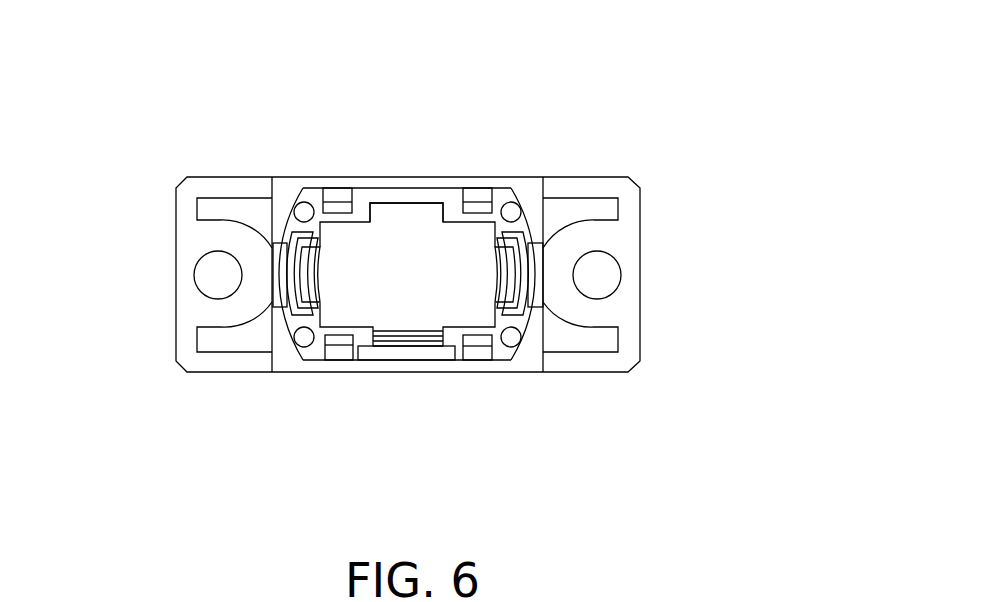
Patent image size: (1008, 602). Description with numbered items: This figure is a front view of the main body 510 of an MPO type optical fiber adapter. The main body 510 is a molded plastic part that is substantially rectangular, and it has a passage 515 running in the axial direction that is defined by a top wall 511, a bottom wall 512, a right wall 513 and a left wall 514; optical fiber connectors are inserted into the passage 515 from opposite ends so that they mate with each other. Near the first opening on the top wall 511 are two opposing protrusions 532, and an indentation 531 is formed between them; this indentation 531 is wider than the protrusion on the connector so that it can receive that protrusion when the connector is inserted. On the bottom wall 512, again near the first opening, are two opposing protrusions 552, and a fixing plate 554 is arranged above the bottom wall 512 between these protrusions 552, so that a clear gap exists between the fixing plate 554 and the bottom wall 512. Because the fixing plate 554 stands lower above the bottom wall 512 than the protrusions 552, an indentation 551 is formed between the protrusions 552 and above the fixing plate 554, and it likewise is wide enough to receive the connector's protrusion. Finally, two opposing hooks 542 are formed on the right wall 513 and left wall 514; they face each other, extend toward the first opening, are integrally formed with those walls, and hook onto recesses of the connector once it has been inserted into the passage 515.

The main body 510 is at (680, 107).
The top wall 511 is at (368, 186).
The bottom wall 512 is at (355, 366).
The right wall 513 is at (537, 210).
The left wall 514 is at (280, 352).
The passage 515 is at (410, 267).
The indentation 531 is at (408, 210).
The protrusions 532 is at (340, 222).
The hooks 542 is at (302, 272).
The indentation 551 is at (392, 325).
The protrusions 552 is at (331, 325).
The fixing plate 554 is at (422, 338).